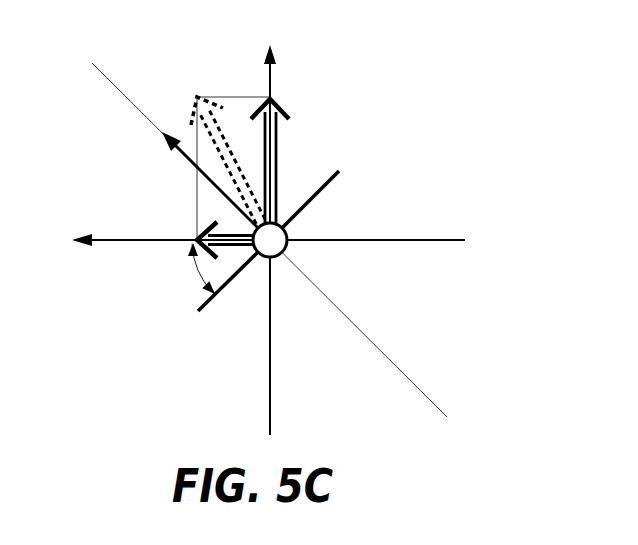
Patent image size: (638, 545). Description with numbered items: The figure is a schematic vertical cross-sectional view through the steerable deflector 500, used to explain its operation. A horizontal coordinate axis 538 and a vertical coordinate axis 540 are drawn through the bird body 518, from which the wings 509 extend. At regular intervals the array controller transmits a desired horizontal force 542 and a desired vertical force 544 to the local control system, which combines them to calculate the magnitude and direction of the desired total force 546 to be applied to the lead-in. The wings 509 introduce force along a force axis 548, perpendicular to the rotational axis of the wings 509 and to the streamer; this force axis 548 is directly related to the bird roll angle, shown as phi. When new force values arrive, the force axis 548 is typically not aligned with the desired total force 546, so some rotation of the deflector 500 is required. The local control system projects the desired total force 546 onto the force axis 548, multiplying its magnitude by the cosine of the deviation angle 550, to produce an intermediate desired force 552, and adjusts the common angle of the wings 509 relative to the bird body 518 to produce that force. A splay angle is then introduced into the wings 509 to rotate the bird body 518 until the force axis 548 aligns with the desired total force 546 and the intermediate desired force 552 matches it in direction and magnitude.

The steerable deflector 500 is at (355, 93).
The wings 509 is at (342, 174).
The bird body 518 is at (287, 232).
The horizontal coordinate axis 538 is at (125, 242).
The vertical coordinate axis 540 is at (272, 78).
The desired horizontal force 542 is at (200, 233).
The desired vertical force 544 is at (277, 150).
The desired total force 546 is at (170, 126).
The force axis 548 is at (110, 80).
The deviation angle 550 is at (173, 185).
The intermediate desired force 552 is at (158, 142).